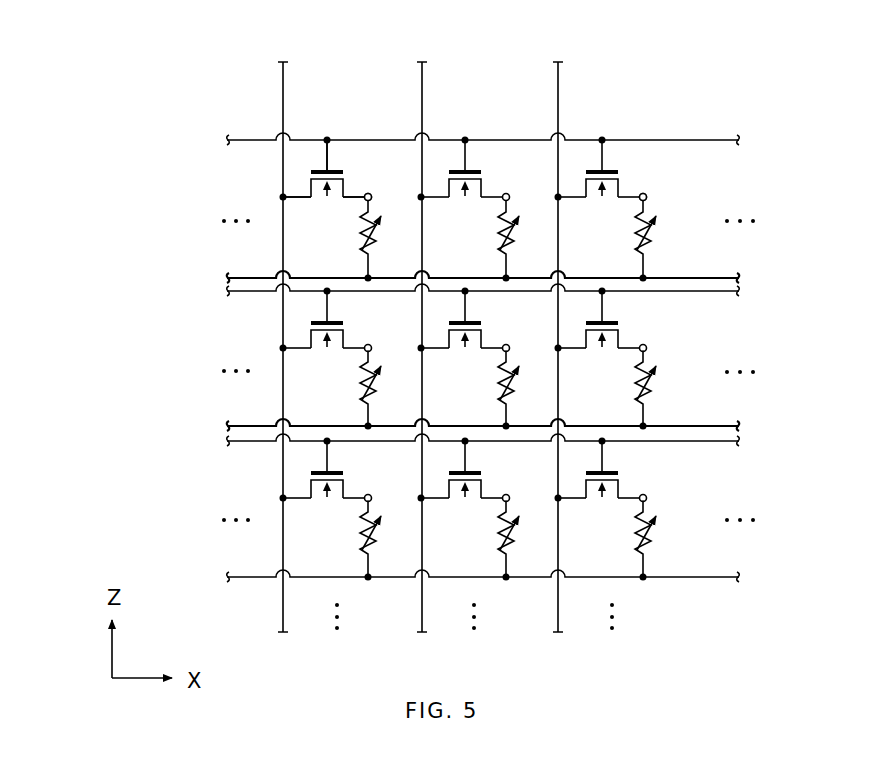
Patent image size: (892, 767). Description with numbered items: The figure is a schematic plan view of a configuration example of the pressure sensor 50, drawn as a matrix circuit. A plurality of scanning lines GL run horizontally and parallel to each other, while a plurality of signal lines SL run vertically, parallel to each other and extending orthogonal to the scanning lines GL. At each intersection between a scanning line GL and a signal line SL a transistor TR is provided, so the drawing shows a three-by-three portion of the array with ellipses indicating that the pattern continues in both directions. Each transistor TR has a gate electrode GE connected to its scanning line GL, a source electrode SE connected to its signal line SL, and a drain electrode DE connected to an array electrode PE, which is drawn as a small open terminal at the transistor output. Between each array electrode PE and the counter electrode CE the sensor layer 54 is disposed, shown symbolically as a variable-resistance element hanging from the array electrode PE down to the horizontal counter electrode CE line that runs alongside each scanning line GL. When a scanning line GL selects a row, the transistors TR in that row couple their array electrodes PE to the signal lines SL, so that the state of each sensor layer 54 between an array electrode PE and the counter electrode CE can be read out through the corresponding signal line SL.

The display device / pixel array 50 is at (717, 87).
The sensor layer 54 is at (355, 237).
The signal line SL is at (284, 78).
The scanning line GL is at (243, 139).
The counter electrode CE is at (720, 277).
The transistor TR is at (351, 161).
The gate electrode GE is at (319, 168).
The source electrode SE is at (309, 192).
The drain electrode DE is at (347, 189).
The array electrode PE is at (372, 195).